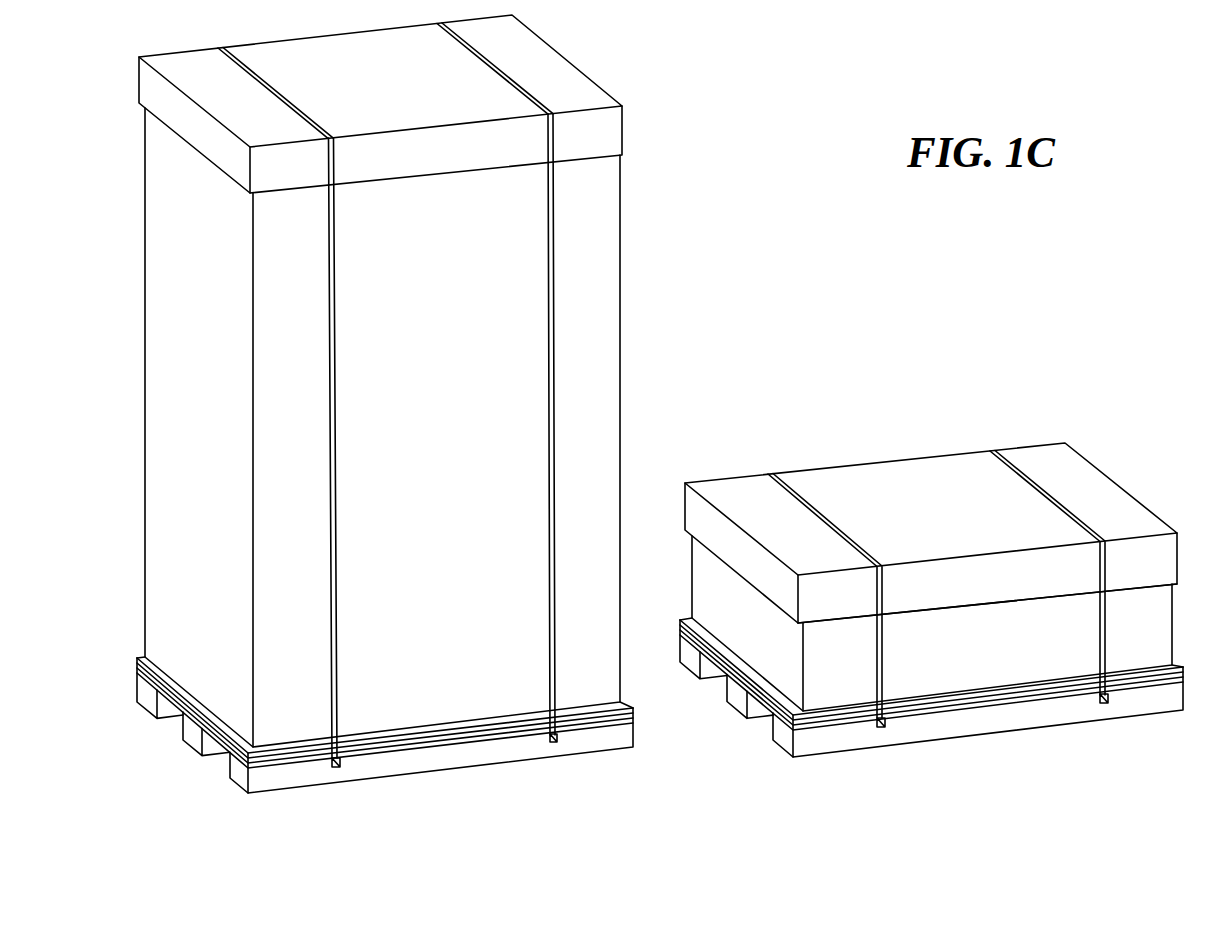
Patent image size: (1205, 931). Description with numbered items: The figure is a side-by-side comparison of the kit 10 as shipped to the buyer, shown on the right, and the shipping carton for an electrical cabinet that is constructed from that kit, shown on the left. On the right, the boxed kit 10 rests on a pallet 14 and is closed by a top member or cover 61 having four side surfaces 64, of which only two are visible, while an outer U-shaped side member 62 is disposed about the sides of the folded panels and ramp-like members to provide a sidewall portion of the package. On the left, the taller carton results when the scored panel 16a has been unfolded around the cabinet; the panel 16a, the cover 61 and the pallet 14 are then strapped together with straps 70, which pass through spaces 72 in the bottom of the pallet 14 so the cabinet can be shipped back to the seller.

The kit 10 is at (931, 523).
The pallet 14 is at (440, 757).
The scored panel 16a is at (464, 493).
The top member or cover 61 is at (587, 87).
The outer U-shaped side member 62 is at (1028, 658).
The side surface 64 is at (756, 565).
The strap 70 is at (335, 369).
The space 72 is at (337, 768).